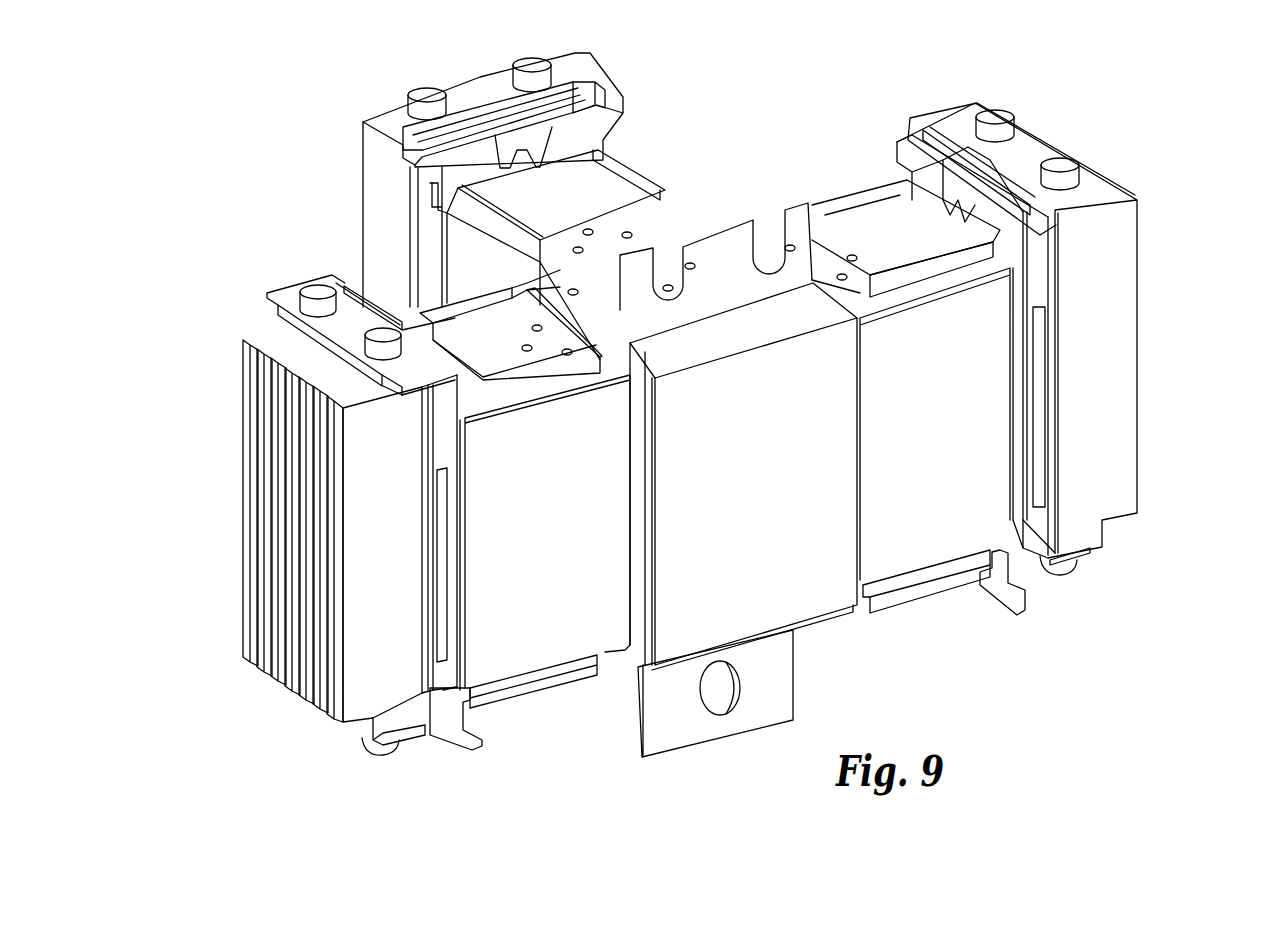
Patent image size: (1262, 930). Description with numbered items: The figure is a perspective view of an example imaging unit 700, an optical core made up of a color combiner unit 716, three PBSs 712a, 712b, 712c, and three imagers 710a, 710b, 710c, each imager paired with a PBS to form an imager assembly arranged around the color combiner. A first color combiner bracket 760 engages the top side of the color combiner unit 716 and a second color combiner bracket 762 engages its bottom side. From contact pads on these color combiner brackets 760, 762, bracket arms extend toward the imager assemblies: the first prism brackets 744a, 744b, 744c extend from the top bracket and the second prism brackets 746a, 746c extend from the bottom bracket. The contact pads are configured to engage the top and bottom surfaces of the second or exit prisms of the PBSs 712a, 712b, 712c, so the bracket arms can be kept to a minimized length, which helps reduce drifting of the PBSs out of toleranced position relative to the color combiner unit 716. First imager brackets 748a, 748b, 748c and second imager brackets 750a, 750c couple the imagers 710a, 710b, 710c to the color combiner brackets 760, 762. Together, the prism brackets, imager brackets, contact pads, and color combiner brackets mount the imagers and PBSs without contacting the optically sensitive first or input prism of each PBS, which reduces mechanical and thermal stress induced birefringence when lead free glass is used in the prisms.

The imaging unit 700 is at (282, 76).
The imager 710a is at (364, 695).
The imager 710b is at (368, 183).
The imager 710c is at (1135, 280).
The PBS 712a is at (566, 640).
The PBS 712b is at (456, 266).
The PBS 712c is at (908, 535).
The color combiner unit 716 is at (808, 598).
The first prism bracket 744a is at (533, 378).
The first prism bracket 744b is at (613, 166).
The first prism bracket 744c is at (845, 197).
The second prism bracket 746a is at (522, 697).
The second prism bracket 746c is at (1003, 600).
The first imager bracket 748a is at (284, 294).
The first imager bracket 748b is at (570, 78).
The first imager bracket 748c is at (945, 114).
The second imager bracket 750a is at (387, 748).
The second imager bracket 750c is at (1072, 566).
The first color combiner bracket 760 is at (668, 247).
The second color combiner bracket 762 is at (633, 668).